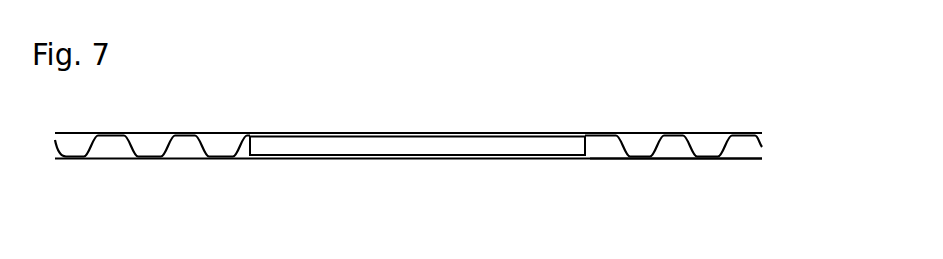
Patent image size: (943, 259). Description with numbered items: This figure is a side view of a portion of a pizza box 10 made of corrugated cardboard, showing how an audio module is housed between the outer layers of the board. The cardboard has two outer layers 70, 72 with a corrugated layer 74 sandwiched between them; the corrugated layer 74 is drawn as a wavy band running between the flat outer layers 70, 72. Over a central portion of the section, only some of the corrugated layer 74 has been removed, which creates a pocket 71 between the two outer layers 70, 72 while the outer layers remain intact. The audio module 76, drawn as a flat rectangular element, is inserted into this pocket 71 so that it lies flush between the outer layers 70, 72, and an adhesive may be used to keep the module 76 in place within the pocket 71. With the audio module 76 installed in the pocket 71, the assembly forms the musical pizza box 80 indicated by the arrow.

The pizza box 10 is at (762, 146).
The outer layer 70 is at (622, 133).
The pocket 71 is at (247, 140).
The outer layer 72 is at (673, 160).
The corrugated layer 74 is at (618, 137).
The audio module 76 is at (395, 145).
The musical pizza box 80 is at (743, 67).